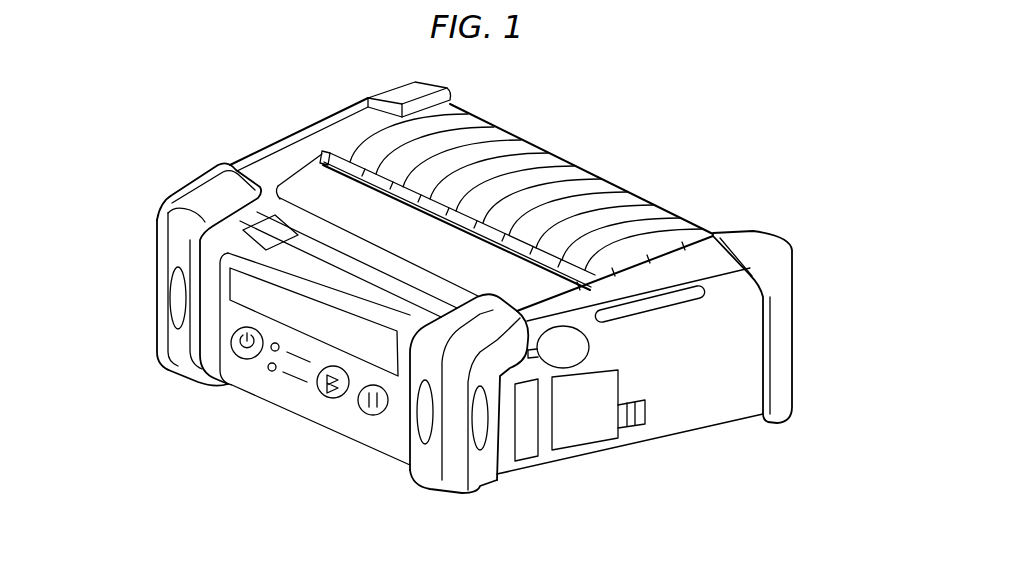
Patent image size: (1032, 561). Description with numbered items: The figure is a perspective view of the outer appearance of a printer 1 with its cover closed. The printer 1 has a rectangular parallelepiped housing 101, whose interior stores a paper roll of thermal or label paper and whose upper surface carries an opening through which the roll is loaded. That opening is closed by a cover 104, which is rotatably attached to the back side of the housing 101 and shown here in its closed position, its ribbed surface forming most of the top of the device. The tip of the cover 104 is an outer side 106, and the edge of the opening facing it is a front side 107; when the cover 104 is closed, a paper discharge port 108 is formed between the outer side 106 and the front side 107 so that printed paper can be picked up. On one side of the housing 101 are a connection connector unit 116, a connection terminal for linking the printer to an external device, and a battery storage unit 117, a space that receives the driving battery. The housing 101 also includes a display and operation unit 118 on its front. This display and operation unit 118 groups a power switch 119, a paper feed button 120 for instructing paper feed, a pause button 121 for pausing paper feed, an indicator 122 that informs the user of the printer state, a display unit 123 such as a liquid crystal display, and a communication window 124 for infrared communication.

The printer 1 is at (660, 159).
The housing 101 is at (748, 318).
The cover 104 is at (547, 167).
The outer side 106 is at (490, 240).
The front side 107 is at (399, 188).
The paper discharge port 108 is at (305, 292).
The connection connector unit 116 is at (572, 355).
The battery storage unit 117 is at (590, 430).
The display and operation unit 118 is at (214, 242).
The power switch 119 is at (250, 367).
The paper feed button 120 is at (343, 403).
The pause button 121 is at (393, 423).
The indicator 122 is at (277, 375).
The display unit 123 is at (227, 260).
The communication window 124 is at (266, 217).